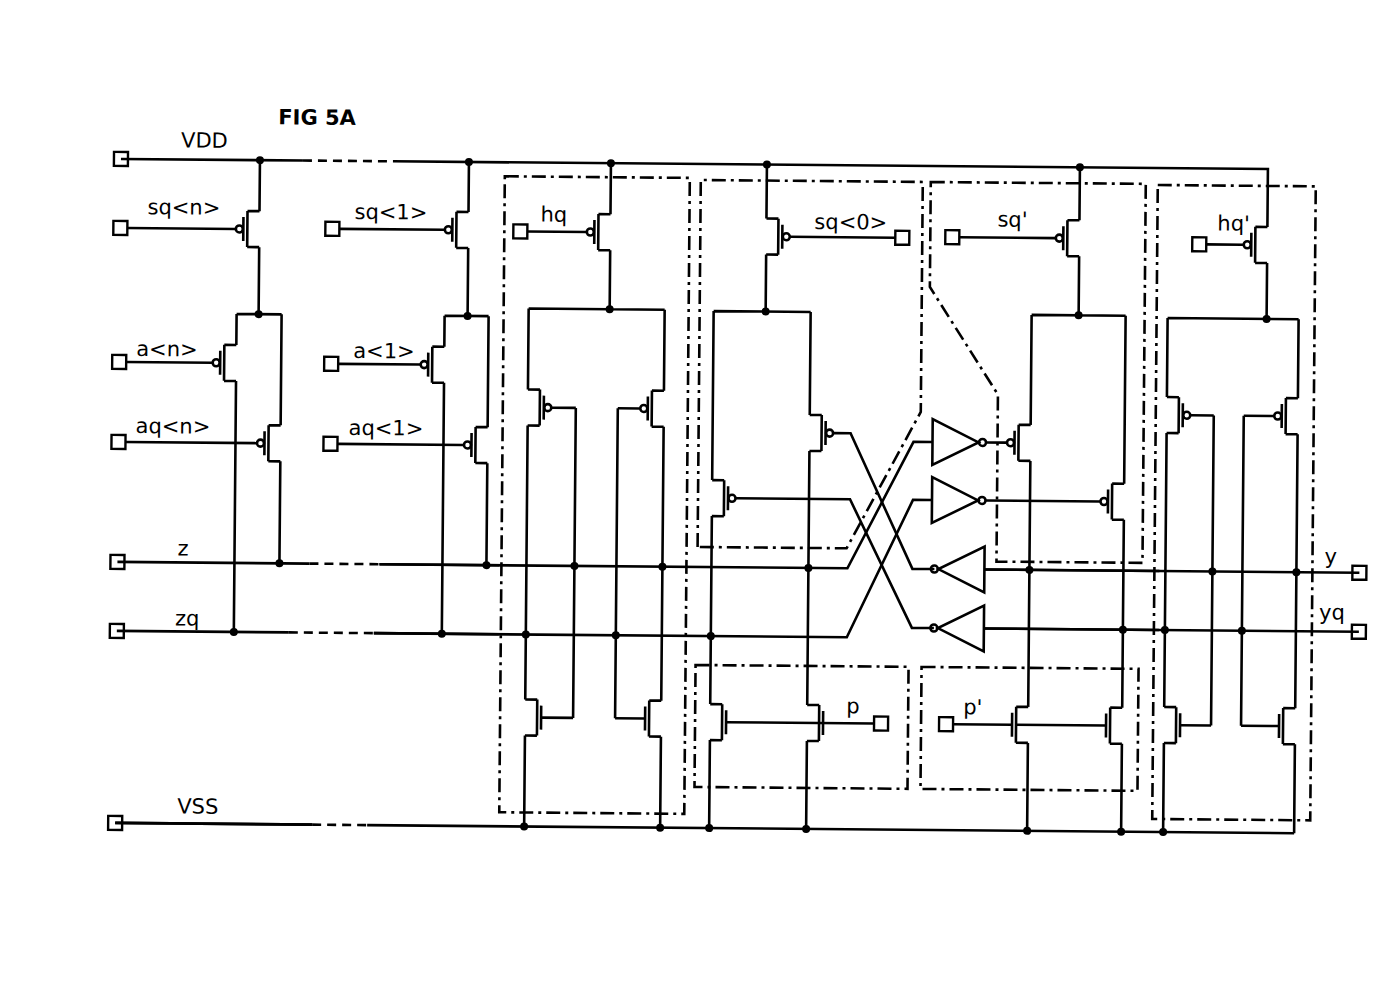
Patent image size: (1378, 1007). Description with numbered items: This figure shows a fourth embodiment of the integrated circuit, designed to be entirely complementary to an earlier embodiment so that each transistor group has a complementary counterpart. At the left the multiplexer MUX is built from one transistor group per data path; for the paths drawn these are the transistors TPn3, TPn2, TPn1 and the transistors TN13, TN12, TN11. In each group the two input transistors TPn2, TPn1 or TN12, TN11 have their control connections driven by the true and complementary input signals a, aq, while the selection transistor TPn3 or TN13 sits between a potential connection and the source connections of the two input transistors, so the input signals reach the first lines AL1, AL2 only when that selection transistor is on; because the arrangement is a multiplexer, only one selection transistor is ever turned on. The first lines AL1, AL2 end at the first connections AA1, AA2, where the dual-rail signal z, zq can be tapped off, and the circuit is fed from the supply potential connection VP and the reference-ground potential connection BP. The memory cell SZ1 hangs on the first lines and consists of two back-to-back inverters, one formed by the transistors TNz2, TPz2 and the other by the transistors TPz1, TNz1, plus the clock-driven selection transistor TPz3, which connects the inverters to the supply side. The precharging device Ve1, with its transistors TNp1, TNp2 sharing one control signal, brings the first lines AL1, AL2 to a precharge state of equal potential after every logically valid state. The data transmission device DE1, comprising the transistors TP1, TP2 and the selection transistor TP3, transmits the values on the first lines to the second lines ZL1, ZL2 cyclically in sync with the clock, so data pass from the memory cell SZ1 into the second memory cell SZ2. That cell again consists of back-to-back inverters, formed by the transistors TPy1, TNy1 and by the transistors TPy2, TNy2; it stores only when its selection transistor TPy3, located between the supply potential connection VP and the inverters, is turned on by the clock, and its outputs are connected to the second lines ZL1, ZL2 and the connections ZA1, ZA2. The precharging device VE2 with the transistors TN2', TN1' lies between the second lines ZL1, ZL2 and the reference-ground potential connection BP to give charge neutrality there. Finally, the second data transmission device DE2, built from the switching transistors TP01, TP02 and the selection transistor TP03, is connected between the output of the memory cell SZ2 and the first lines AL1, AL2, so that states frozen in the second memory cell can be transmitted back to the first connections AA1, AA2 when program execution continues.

The supply potential connection VP is at (125, 169).
The selection transistor TPn3 is at (238, 243).
The input transistor TPn2 is at (215, 378).
The input transistor TPn1 is at (262, 462).
The first connection AA1 is at (125, 575).
The first connection AA2 is at (120, 645).
The reference-ground potential connection BP is at (120, 819).
The selection transistor TN13 is at (450, 243).
The input transistor TN12 is at (422, 376).
The input transistor TN11 is at (470, 460).
The first line AL1 is at (410, 570).
The first line AL2 is at (420, 640).
The multiplexer MUX is at (407, 839).
The memory cell SZ1 is at (608, 816).
The selection transistor TPz3 is at (585, 250).
The transistor TPz1 is at (645, 392).
The transistor TPz2 is at (550, 400).
The transistor TNz2 is at (547, 724).
The transistor TNz1 is at (645, 740).
The second data transmission device DE2 is at (800, 178).
The selection transistor TP03 is at (788, 250).
The transistor TP01 is at (740, 482).
The transistor TP02 is at (835, 420).
The precharging device Ve1 is at (835, 790).
The precharging transistor TNp1 is at (735, 742).
The precharging transistor TNp2 is at (830, 742).
The data transmission device DE1 is at (997, 178).
The selection transistor TP3 is at (1055, 252).
The transistor TP1 is at (1025, 430).
The transistor TP2 is at (1103, 492).
The precharging device VE2 is at (988, 790).
The precharging transistor TN2' is at (983, 740).
The precharging transistor TN1' is at (1080, 741).
The second line ZL1 is at (1050, 575).
The second line ZL2 is at (1118, 621).
The second memory cell SZ2 is at (1222, 818).
The selection transistor TPy3 is at (1250, 258).
The transistor TPy1 is at (1280, 392).
The transistor TPy2 is at (1192, 404).
The transistor TNy2 is at (1187, 728).
The transistor TNy1 is at (1276, 742).
The second connection ZA1 is at (1360, 559).
The second connection ZA2 is at (1360, 634).